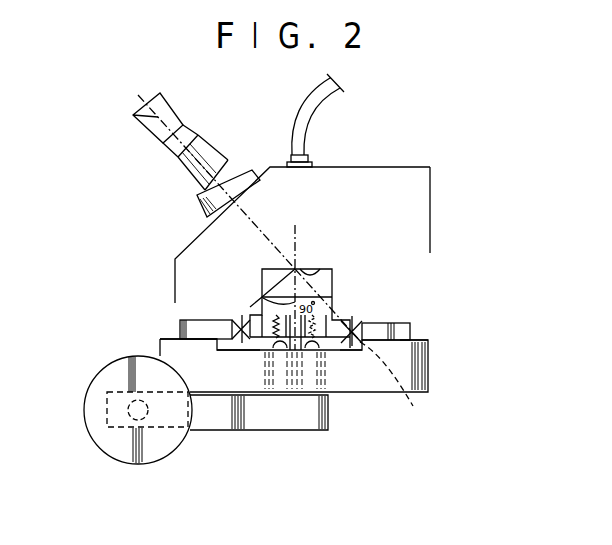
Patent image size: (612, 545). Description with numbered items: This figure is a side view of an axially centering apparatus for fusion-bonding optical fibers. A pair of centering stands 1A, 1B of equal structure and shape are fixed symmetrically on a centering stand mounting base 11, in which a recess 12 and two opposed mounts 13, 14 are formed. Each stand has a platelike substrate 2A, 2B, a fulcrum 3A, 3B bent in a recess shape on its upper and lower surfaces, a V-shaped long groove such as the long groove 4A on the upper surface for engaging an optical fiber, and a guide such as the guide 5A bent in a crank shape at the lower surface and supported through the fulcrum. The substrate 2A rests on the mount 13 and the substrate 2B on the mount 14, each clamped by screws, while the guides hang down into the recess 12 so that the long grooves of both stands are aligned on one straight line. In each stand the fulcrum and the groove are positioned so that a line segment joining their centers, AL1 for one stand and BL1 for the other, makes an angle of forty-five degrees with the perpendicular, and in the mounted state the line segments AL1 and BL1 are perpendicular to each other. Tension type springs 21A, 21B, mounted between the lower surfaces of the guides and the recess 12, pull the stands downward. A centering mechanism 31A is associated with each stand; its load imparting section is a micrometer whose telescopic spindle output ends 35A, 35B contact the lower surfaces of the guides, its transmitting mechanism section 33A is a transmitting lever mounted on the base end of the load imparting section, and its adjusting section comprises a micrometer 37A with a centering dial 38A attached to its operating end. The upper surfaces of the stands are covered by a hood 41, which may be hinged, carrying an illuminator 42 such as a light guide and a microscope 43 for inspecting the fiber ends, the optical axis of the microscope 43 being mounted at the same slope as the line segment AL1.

The centering stand 1A is at (342, 268).
The centering stand 1B is at (259, 301).
The substrate 2A is at (398, 323).
The substrate 2B is at (185, 320).
The fulcrum 3A is at (350, 337).
The fulcrum 3B is at (244, 320).
The V-shaped long groove 4A is at (320, 268).
The guide 5A is at (333, 298).
The centering stand mounting base 11 is at (428, 370).
The recess 12 is at (340, 350).
The mount 13 is at (414, 340).
The mount 14 is at (160, 339).
The tension type spring 21A is at (258, 350).
The tension type spring 21B is at (405, 388).
The centering mechanism 31A is at (101, 369).
The transmitting mechanism section 33A is at (310, 425).
The output end 35A is at (324, 356).
The output end 35B is at (290, 352).
The micrometer 37A is at (146, 418).
The centering dial 38A is at (105, 443).
The hood 41 is at (381, 166).
The illuminator 42 is at (301, 121).
The microscope 43 is at (176, 180).
The line segment AL1 is at (294, 265).
The line segment BL1 is at (305, 255).